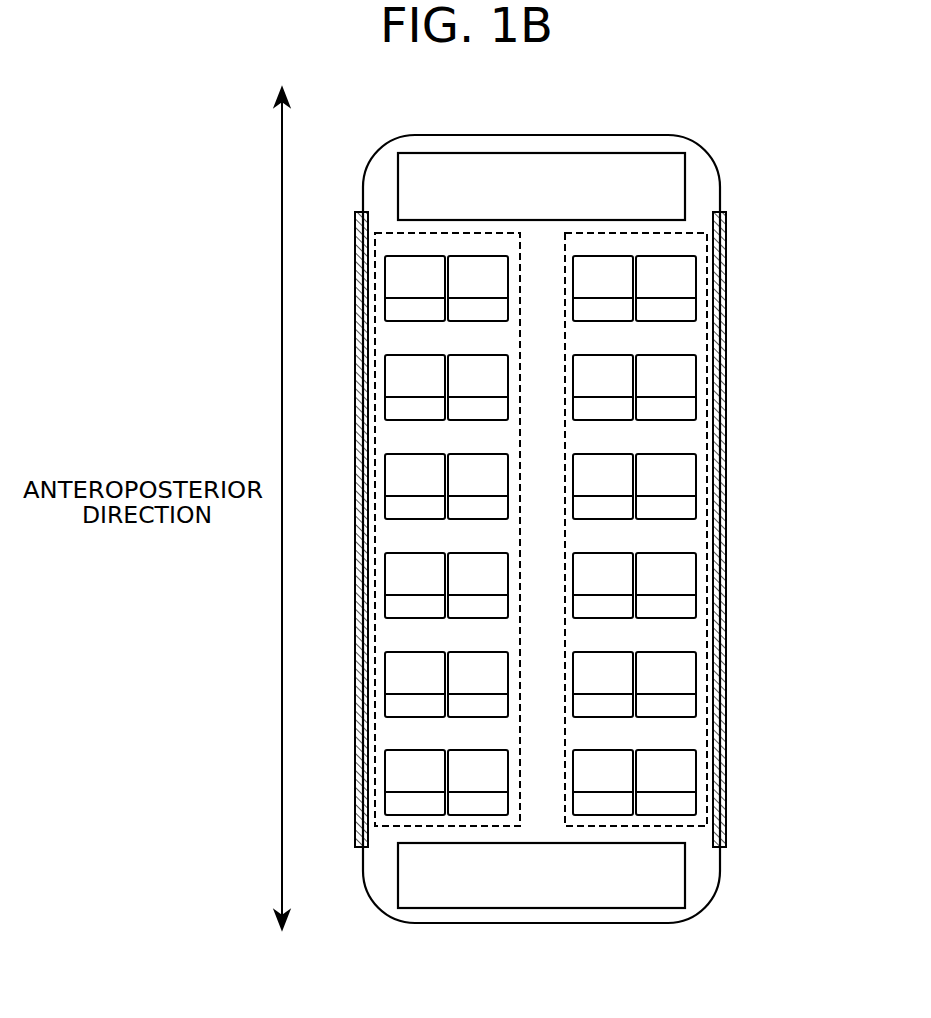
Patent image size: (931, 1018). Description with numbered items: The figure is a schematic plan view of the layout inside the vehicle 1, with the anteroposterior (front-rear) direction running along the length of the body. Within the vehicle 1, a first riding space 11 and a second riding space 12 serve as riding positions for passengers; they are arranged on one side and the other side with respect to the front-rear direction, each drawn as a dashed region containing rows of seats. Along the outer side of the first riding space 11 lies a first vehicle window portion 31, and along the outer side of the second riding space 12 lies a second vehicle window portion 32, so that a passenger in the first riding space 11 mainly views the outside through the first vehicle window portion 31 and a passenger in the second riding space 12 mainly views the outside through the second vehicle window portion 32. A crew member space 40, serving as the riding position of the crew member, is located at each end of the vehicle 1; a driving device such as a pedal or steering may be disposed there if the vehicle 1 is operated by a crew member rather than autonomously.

The vehicle 1 is at (696, 102).
The first riding space 11 is at (392, 233).
The second riding space 12 is at (692, 232).
The first vehicle window portion 31 is at (356, 240).
The second vehicle window portion 32 is at (728, 237).
The crew member space 40 is at (575, 172).